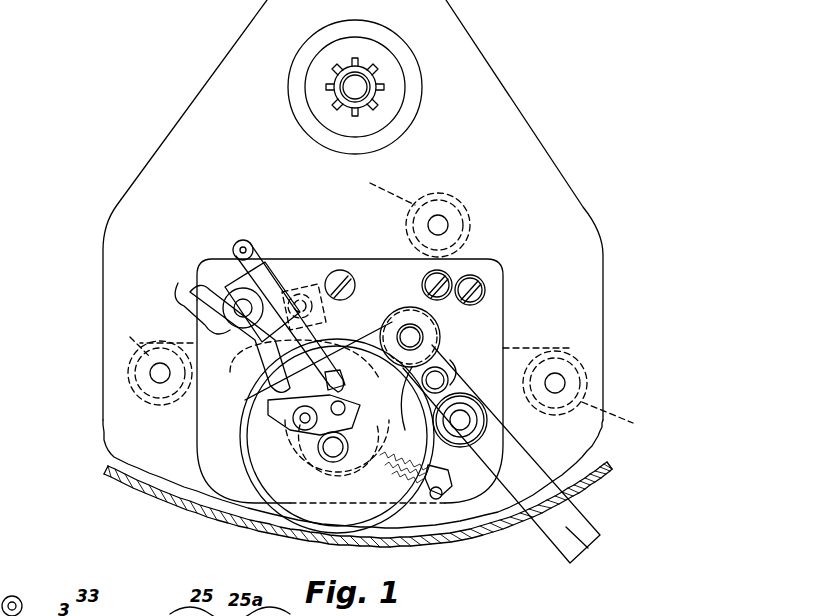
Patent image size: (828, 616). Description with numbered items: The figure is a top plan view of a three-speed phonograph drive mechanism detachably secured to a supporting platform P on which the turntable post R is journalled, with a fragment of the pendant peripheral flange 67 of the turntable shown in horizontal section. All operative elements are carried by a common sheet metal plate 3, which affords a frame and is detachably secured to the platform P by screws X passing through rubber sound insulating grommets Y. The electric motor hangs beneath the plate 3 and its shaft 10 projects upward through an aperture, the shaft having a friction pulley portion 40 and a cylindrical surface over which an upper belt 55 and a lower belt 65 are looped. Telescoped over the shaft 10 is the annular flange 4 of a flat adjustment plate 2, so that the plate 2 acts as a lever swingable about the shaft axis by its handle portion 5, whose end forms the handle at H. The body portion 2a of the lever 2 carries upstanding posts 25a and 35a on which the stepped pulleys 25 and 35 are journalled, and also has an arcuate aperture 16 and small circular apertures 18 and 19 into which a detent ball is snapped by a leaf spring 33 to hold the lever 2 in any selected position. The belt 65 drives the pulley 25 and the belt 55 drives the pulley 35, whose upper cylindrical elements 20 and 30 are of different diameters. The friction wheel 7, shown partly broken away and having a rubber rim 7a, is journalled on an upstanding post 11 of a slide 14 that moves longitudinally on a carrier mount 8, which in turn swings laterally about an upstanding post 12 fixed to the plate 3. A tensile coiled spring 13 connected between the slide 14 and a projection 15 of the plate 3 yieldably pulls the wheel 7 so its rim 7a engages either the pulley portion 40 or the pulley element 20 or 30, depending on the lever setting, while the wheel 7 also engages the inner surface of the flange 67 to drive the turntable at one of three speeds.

The turntable post R is at (353, 85).
The platform P is at (556, 200).
The screws X is at (160, 373).
The rubber sound insulating grommets Y is at (381, 309).
The leaf spring 33 is at (341, 270).
The sheet metal plate 3 is at (303, 270).
The carrier mount 8 is at (226, 287).
The upstanding post 12 is at (243, 308).
The adjustment plate 2 is at (360, 352).
The friction wheel 7 is at (283, 492).
The peripheral rubber rim 7a is at (241, 446).
The pendant peripheral flange 67 is at (135, 487).
The handle portion 5 is at (567, 515).
The annular flange 4 is at (446, 362).
The upper pulley element 20 is at (409, 336).
The lower belt 65 is at (414, 322).
The stepped pulley 25 is at (412, 335).
The upstanding post 25a is at (472, 292).
The body portion 2a is at (450, 357).
The handle portion H is at (587, 547).
The friction pulley portion 40 is at (445, 373).
The motor shaft 10 is at (437, 380).
The upper belt 55 is at (460, 420).
The upper pulley element 30 is at (478, 425).
The stepped pulley 35 is at (468, 440).
The upstanding post 35a is at (500, 402).
The arcuately shaped aperture 16 is at (300, 412).
The slide 14 is at (270, 415).
The circular aperture 18 is at (340, 387).
The circular aperture 19 is at (345, 408).
The upstanding post 11 is at (340, 438).
The tensile coiled spring 13 is at (400, 472).
The projection 15 is at (443, 493).